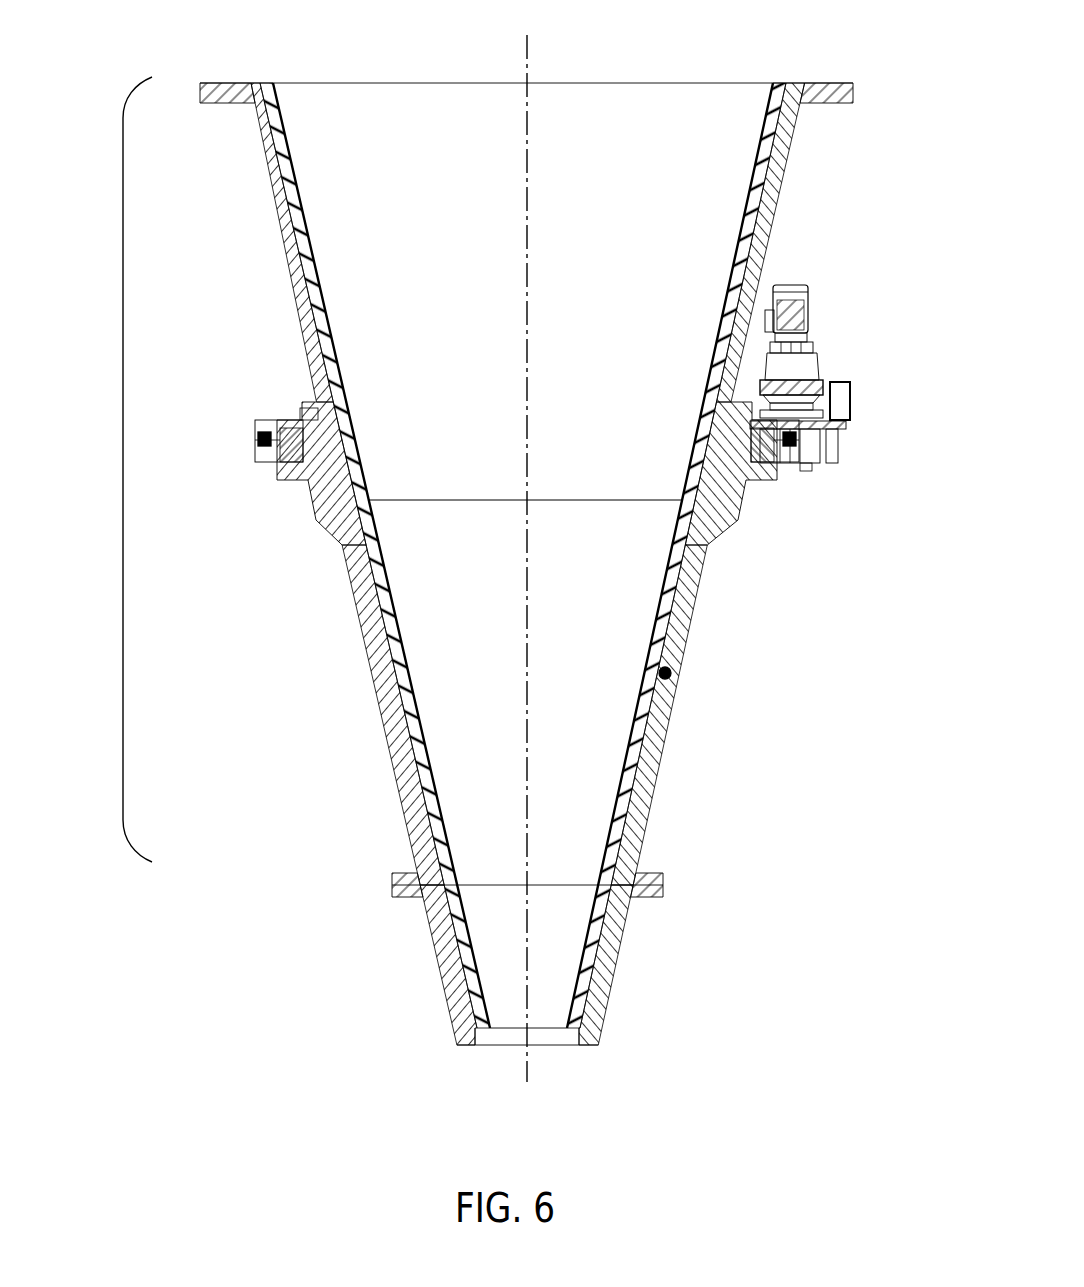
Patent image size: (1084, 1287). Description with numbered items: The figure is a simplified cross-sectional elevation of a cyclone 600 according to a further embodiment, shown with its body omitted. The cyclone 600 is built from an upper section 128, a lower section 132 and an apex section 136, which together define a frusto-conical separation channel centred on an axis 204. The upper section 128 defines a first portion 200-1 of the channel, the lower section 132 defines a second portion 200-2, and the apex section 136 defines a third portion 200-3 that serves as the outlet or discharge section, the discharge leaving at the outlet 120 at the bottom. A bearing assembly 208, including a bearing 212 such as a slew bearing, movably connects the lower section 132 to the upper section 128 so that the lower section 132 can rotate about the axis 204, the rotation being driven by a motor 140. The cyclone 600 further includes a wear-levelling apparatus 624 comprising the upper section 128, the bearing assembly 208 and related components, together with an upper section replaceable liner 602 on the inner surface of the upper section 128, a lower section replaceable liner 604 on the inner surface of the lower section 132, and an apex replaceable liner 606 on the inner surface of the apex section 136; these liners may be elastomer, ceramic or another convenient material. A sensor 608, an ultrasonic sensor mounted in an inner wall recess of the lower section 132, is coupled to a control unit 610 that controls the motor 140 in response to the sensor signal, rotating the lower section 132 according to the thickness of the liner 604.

The cyclone 600 is at (196, 979).
The outlet 120 is at (473, 1048).
The upper section 128 is at (290, 265).
The lower section 132 is at (380, 712).
The apex section 136 is at (442, 975).
The motor 140 is at (806, 292).
The axis 204 is at (529, 42).
The bearing assembly 208 is at (243, 467).
The bearing 212 is at (262, 428).
The upper section replaceable liner 602 is at (270, 104).
The lower section replaceable liner 604 is at (368, 569).
The apex replaceable liner 606 is at (453, 930).
The sensor 608 is at (668, 673).
The control unit 610 is at (851, 385).
The wear-levelling apparatus 624 is at (123, 471).
The first portion 200-1 is at (406, 231).
The second portion 200-2 is at (510, 671).
The third portion 200-3 is at (543, 925).